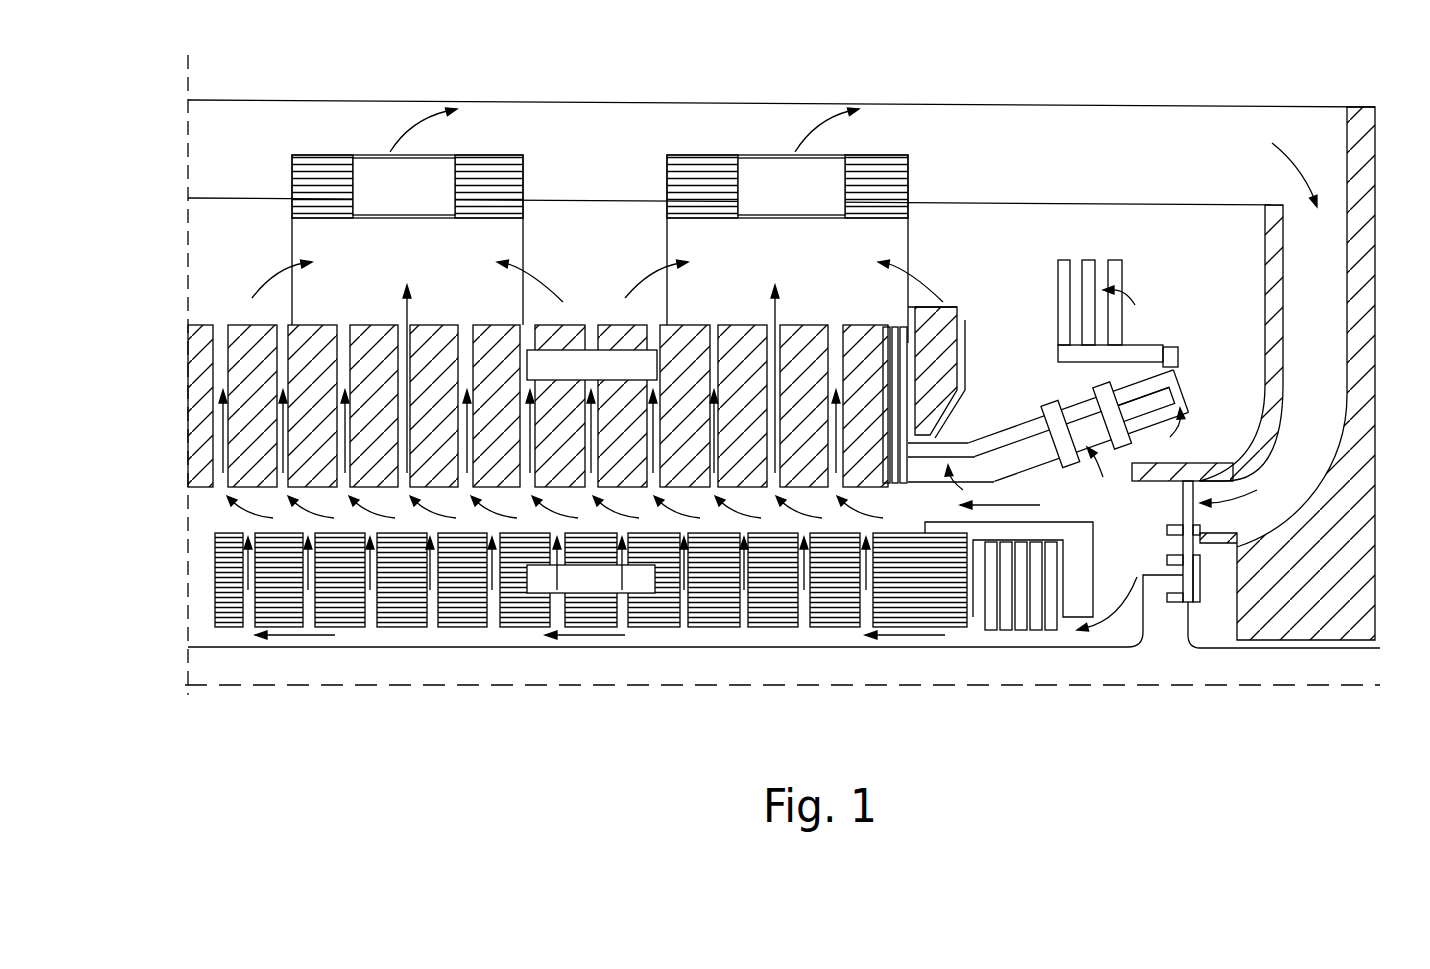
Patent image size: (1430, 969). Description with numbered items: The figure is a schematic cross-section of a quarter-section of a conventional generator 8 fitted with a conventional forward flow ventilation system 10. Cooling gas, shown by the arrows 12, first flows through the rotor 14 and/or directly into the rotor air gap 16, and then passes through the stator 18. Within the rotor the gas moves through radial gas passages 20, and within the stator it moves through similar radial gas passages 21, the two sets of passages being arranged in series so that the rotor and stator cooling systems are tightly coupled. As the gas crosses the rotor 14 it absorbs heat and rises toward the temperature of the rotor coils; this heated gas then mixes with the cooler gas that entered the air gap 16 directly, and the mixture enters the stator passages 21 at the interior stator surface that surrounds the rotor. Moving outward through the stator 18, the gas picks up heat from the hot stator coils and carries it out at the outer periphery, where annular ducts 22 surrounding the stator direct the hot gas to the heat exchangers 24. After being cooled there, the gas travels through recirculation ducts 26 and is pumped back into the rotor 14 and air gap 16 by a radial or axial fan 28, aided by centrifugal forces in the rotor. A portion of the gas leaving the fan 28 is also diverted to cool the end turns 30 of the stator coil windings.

The generator 8 is at (1367, 659).
The forward flow ventilation system 10 is at (1113, 153).
The cooling gas 12 is at (270, 268).
The rotor 14 is at (654, 633).
The rotor air gap 16 is at (198, 507).
The stator 18 is at (501, 365).
The radial gas passages 20 is at (308, 615).
The radial gas passages 21 is at (465, 335).
The annular ducts 22 is at (523, 232).
The heat exchangers 24 is at (292, 158).
The recirculation ducts 26 is at (1065, 123).
The fan 28 is at (1167, 548).
The end turns 30 is at (1067, 403).